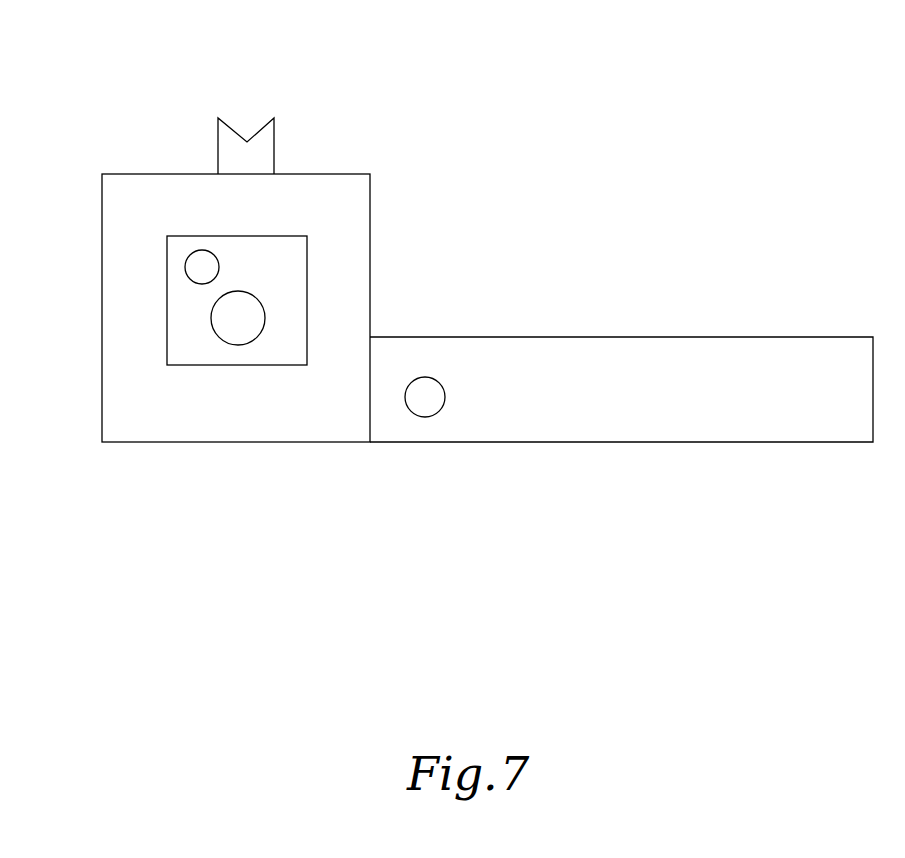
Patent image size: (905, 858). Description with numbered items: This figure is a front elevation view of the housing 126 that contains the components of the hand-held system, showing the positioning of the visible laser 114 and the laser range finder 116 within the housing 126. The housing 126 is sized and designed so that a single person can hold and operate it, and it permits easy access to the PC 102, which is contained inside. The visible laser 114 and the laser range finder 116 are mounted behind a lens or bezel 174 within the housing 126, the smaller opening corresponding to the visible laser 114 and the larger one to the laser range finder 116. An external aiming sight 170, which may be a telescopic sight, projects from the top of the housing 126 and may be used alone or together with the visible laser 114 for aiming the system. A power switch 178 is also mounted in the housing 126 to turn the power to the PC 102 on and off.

The PC 102 is at (652, 427).
The visible laser 114 is at (186, 275).
The laser range finder 116 is at (211, 319).
The housing 126 is at (185, 572).
The external aiming sight 170 is at (228, 121).
The lens or bezel 174 is at (181, 348).
The power switch 178 is at (425, 408).